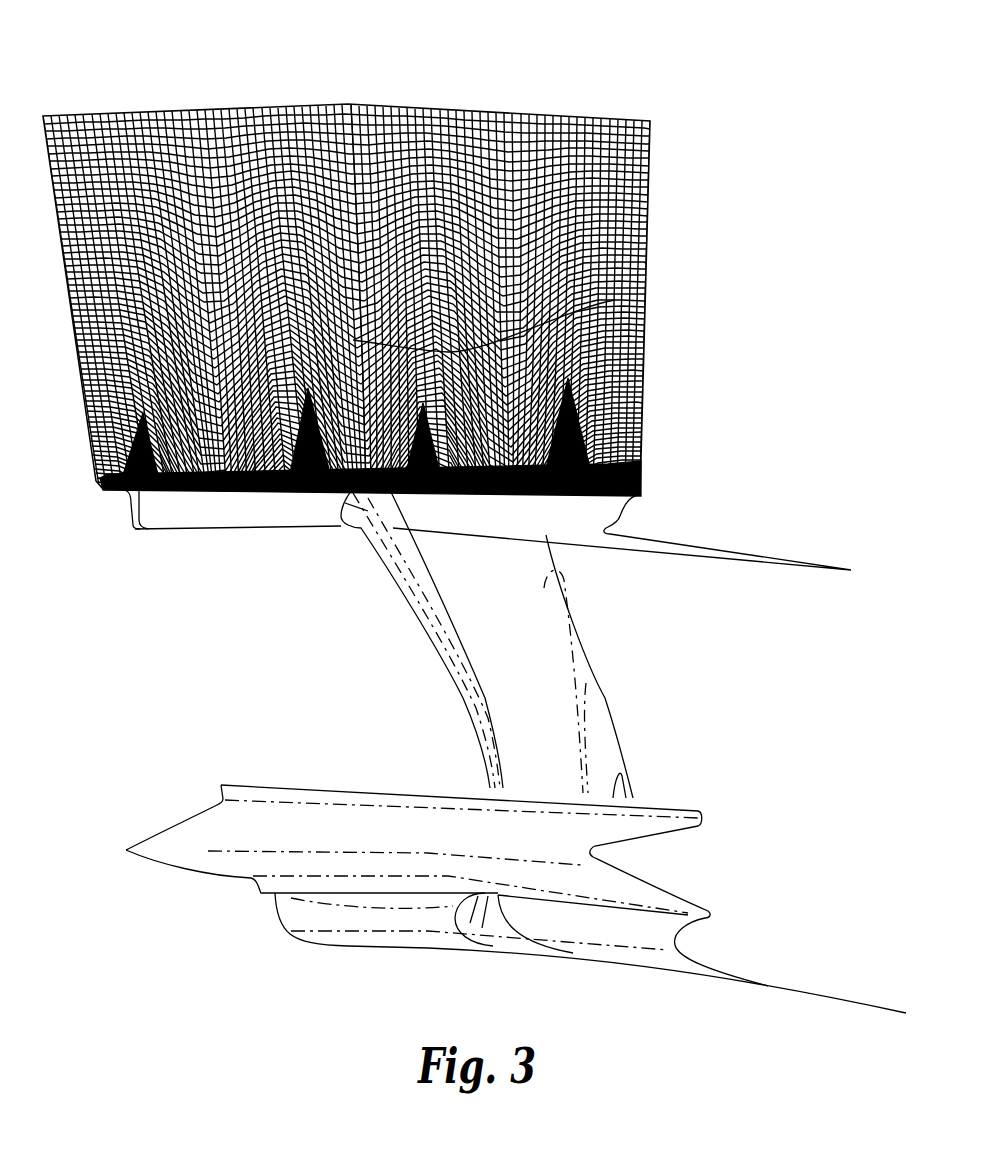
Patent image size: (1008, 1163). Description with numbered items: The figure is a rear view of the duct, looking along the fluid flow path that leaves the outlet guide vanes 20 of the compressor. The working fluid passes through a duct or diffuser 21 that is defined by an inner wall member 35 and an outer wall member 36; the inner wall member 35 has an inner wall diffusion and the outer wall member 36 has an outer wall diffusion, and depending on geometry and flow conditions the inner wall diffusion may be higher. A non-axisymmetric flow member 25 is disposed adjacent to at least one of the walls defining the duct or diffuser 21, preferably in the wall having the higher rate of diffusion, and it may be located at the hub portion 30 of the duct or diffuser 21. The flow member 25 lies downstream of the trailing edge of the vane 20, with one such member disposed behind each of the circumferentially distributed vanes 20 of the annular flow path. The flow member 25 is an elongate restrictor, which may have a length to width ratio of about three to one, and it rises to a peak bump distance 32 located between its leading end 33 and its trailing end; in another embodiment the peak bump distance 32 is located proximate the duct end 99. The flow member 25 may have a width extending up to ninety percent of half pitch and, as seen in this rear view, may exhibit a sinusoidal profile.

The outlet guide vane 20 is at (527, 668).
The duct or diffuser 21 is at (140, 857).
The non-axisymmetric flow member 25 is at (345, 225).
The hub portion 30 is at (478, 887).
The peak bump distance 32 is at (607, 292).
The leading end 33 is at (607, 443).
The inner wall member 35 is at (145, 826).
The outer wall member 36 is at (126, 518).
The duct end 99 is at (520, 100).